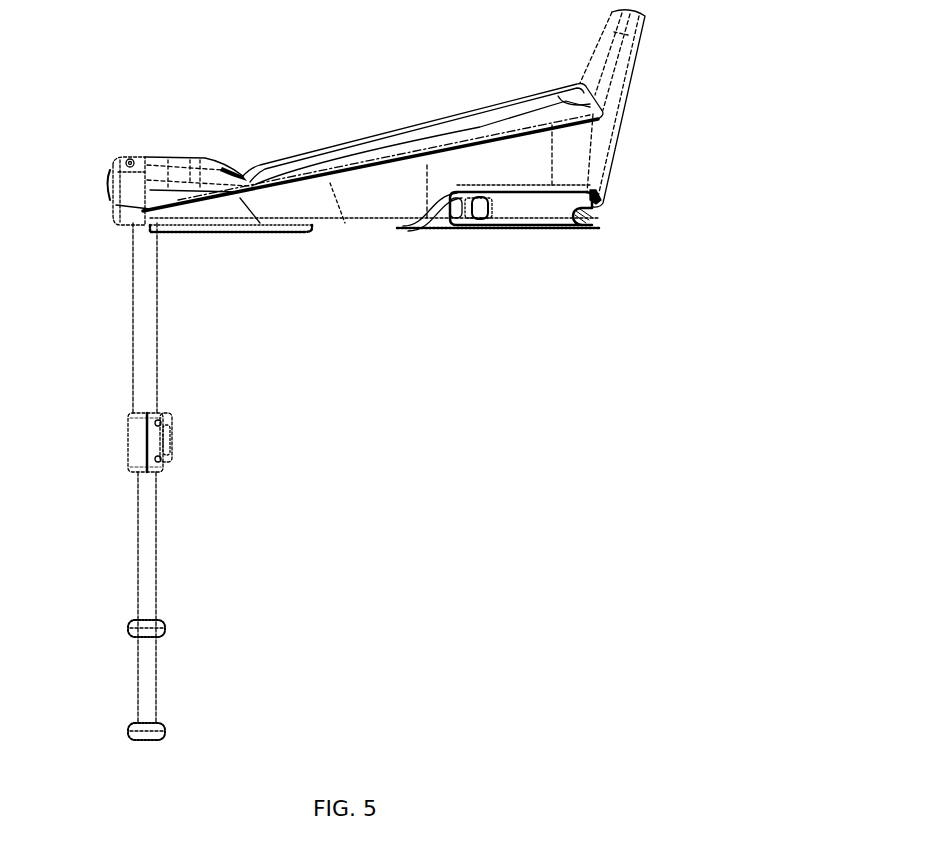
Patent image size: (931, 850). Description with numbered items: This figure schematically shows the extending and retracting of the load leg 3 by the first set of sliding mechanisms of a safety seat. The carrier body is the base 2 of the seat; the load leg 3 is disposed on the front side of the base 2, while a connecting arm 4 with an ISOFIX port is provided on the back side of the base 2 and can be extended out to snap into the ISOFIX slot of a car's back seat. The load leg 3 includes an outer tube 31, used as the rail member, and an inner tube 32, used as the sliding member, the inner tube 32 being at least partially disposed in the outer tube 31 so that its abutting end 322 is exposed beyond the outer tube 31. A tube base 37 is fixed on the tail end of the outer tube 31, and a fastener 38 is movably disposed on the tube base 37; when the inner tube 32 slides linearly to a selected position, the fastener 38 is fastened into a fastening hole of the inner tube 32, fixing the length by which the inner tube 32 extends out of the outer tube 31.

The base 2 is at (346, 160).
The load leg 3 is at (107, 238).
The connecting arm 4 is at (538, 213).
The outer tube 31 is at (144, 358).
The inner tube 32 is at (137, 545).
The tube base 37 is at (155, 451).
The fastener 38 is at (170, 418).
The abutting end 322 is at (130, 628).